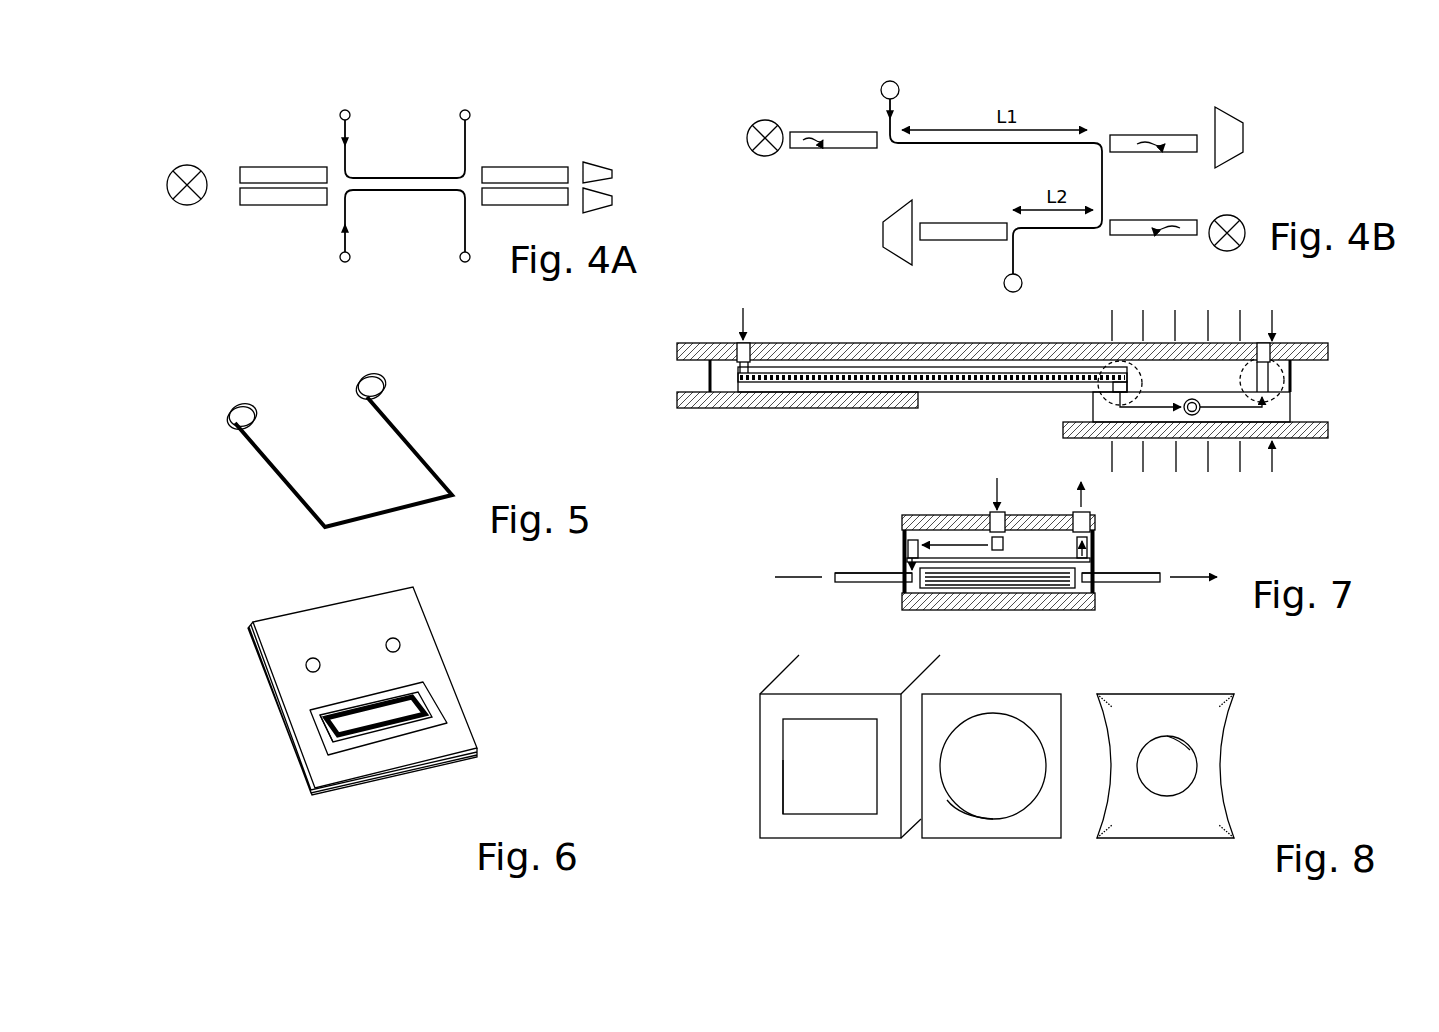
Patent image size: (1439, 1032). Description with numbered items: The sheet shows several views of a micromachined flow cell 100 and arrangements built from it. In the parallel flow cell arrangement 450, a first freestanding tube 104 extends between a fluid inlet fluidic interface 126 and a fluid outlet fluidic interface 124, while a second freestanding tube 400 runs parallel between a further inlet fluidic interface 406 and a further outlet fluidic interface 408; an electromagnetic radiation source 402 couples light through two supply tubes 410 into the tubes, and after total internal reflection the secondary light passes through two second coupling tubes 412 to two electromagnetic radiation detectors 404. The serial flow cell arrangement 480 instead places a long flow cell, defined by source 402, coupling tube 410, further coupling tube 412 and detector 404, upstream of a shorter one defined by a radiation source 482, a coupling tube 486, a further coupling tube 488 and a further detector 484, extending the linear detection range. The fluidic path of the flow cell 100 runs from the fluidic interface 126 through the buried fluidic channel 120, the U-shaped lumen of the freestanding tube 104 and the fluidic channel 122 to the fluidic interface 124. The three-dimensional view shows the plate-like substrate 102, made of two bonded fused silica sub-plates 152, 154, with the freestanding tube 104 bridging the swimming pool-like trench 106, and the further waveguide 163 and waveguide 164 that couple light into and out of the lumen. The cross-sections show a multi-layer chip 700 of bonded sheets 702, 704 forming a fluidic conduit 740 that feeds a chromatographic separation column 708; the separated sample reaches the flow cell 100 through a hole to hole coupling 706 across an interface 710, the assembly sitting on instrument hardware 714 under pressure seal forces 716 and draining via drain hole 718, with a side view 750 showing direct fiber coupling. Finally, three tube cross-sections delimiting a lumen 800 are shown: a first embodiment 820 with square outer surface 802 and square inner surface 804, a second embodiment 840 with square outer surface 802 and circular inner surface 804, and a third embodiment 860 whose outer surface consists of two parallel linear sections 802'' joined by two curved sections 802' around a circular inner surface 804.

In FIG. 7, the micromachined flow cell 100 is at (1068, 405).
In FIG. 6, the plate-like substrate 102 is at (357, 713).
In FIG. 4A, the freestanding tube 104 is at (422, 177).
In FIG. 4B, the freestanding tube 104 is at (994, 186).
In FIG. 5, the freestanding tube 104 is at (362, 518).
In FIG. 6, the freestanding tube 104 is at (373, 727).
In FIG. 7, the freestanding tube 104 is at (1200, 415).
In FIG. 6, the trench 106 is at (390, 730).
In FIG. 5, the fluidic channel 120 is at (282, 473).
In FIG. 5, the fluidic channel 122 is at (410, 443).
In FIG. 4A, the fluidic interface 124 is at (464, 109).
In FIG. 4B, the fluidic interface 124 is at (1022, 278).
In FIG. 5, the fluidic interface 124 is at (240, 404).
In FIG. 6, the fluidic interface 124 is at (391, 638).
In FIG. 4A, the fluidic interface 126 is at (344, 109).
In FIG. 4B, the fluidic interface 126 is at (899, 88).
In FIG. 5, the fluidic interface 126 is at (373, 374).
In FIG. 6, the fluidic interface 126 is at (310, 658).
In FIG. 6, the sub-plate 152 is at (275, 710).
In FIG. 6, the sub-plate 154 is at (283, 650).
In FIG. 6, the further waveguide 163 is at (323, 747).
In FIG. 7, the further waveguide 163 is at (843, 582).
In FIG. 6, the waveguide 164 is at (450, 725).
In FIG. 7, the waveguide 164 is at (1160, 575).
In FIG. 4A, the second freestanding tube 400 is at (385, 190).
In FIG. 4A, the electromagnetic radiation source 402 is at (186, 165).
In FIG. 4B, the electromagnetic radiation source 402 is at (750, 128).
In FIG. 4A, the electromagnetic radiation detector 404 is at (614, 196).
In FIG. 4B, the electromagnetic radiation detector 404 is at (1237, 115).
In FIG. 4A, the fluidic interface 406 is at (343, 262).
In FIG. 4A, the fluidic interface 408 is at (468, 262).
In FIG. 4A, the supply tube 410 is at (265, 188).
In FIG. 4B, the supply tube 410 is at (853, 131).
In FIG. 4A, the second coupling tube 412 is at (520, 188).
In FIG. 4B, the second coupling tube 412 is at (1152, 135).
In FIG. 4A, the flow cell arrangement 450 is at (575, 125).
In FIG. 4B, the serial flow cell arrangement 480 is at (1315, 137).
In FIG. 4B, the electromagnetic radiation source 482 is at (1245, 222).
In FIG. 4B, the further detector 484 is at (882, 225).
In FIG. 4B, the coupling tube 486 is at (1125, 236).
In FIG. 4B, the further coupling tube 488 is at (962, 223).
In FIG. 7, the multi-layer chip 700 is at (702, 373).
In FIG. 7, the bonded sheet 702 is at (822, 343).
In FIG. 7, the bonded sheet 704 is at (770, 393).
In FIG. 7, the hole to hole coupling 706 is at (1120, 362).
In FIG. 7, the chromatographic separation column 708 is at (930, 372).
In FIG. 7, the interface 710 is at (1295, 398).
In FIG. 7, the instrument hardware 714 is at (1073, 441).
In FIG. 7, the pressure seal forces 716 is at (1208, 462).
In FIG. 7, the drain hole 718 is at (1262, 343).
In FIG. 7, the fluidic conduit 740 is at (738, 345).
In FIG. 7, the side view 750 is at (790, 535).
In FIG. 8, the lumen 800 is at (806, 738).
In FIG. 8, the outer surface 802 is at (865, 656).
In FIG. 8, the curved section 802' is at (1187, 760).
In FIG. 8, the linear section 802'' is at (1142, 757).
In FIG. 8, the inner surface 804 is at (783, 791).
In FIG. 8, the first embodiment 820 is at (820, 842).
In FIG. 8, the second embodiment 840 is at (1003, 845).
In FIG. 8, the third embodiment 860 is at (1213, 845).